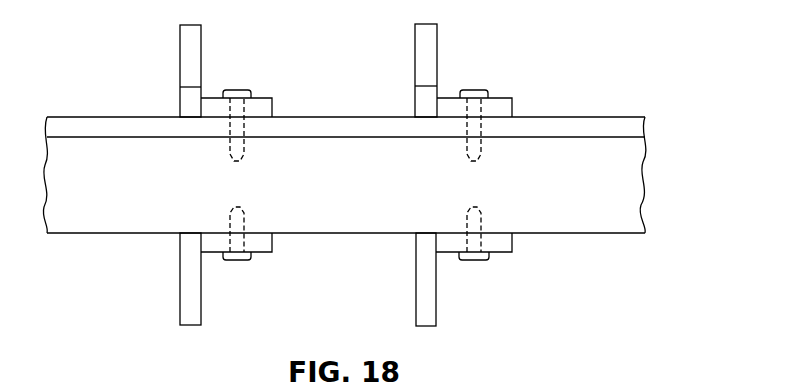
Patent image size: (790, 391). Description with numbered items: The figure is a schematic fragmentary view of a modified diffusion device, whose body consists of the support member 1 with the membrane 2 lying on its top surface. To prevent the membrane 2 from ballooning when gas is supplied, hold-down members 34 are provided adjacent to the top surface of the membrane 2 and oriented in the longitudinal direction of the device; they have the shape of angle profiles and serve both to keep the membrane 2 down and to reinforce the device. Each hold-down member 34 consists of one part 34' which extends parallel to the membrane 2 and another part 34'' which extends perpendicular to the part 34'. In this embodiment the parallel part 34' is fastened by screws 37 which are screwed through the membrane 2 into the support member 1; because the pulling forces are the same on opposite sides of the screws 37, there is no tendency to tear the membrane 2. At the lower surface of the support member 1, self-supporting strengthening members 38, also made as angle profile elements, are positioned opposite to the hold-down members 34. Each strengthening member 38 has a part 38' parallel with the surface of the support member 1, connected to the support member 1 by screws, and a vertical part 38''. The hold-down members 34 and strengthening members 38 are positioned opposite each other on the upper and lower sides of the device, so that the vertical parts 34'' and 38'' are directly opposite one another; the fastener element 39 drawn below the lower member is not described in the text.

The support member 1 is at (633, 177).
The membrane 2 is at (579, 125).
The hold-down member 34 is at (309, 84).
The part parallel to the membrane 34' is at (272, 93).
The part perpendicular to the parallel part 34'' is at (227, 62).
The screw 37 is at (235, 90).
The strengthening member 38 is at (310, 273).
The part parallel with the support member surface 38' is at (273, 249).
The vertical part of the strengthening member 38'' is at (227, 286).
The nut 39 is at (237, 261).